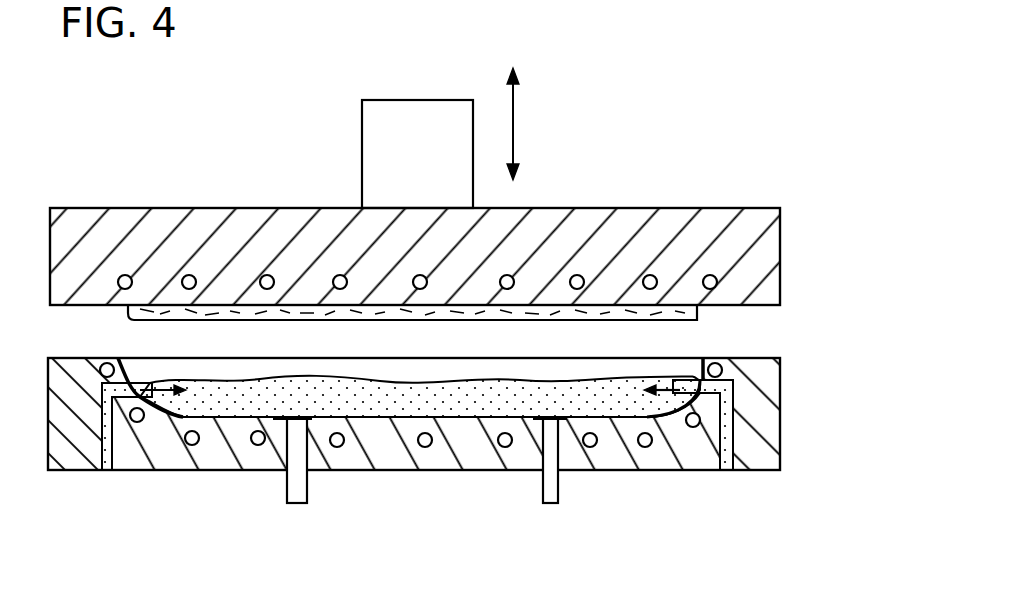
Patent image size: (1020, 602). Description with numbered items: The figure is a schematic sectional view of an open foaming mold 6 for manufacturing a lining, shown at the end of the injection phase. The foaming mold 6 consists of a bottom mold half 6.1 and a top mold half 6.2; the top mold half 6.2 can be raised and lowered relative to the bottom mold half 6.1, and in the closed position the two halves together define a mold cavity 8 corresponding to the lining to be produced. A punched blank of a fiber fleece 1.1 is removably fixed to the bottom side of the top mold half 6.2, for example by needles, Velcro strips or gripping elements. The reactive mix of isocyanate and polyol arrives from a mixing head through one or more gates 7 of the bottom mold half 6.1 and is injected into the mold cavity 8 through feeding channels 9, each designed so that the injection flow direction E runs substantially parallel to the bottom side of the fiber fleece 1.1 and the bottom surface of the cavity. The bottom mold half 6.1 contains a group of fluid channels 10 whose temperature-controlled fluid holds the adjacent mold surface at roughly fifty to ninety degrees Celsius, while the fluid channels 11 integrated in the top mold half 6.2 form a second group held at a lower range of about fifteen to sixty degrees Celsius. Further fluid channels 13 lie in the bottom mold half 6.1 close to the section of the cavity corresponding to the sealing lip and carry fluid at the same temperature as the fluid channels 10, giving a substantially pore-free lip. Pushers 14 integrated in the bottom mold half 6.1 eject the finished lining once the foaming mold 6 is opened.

The foaming mold 6 is at (619, 157).
The bottom mold half 6.1 is at (632, 460).
The top mold half 6.2 is at (690, 208).
The fiber fleece 1.1 is at (442, 320).
The mold cavity 8 is at (518, 374).
The gate 7 is at (111, 471).
The feeding channel 9 is at (153, 473).
The fluid channels 10 is at (504, 446).
The fluid channels 11 is at (267, 275).
The fluid channels 13 is at (102, 364).
The pushers 14 is at (284, 487).
The injection flow direction E is at (153, 385).